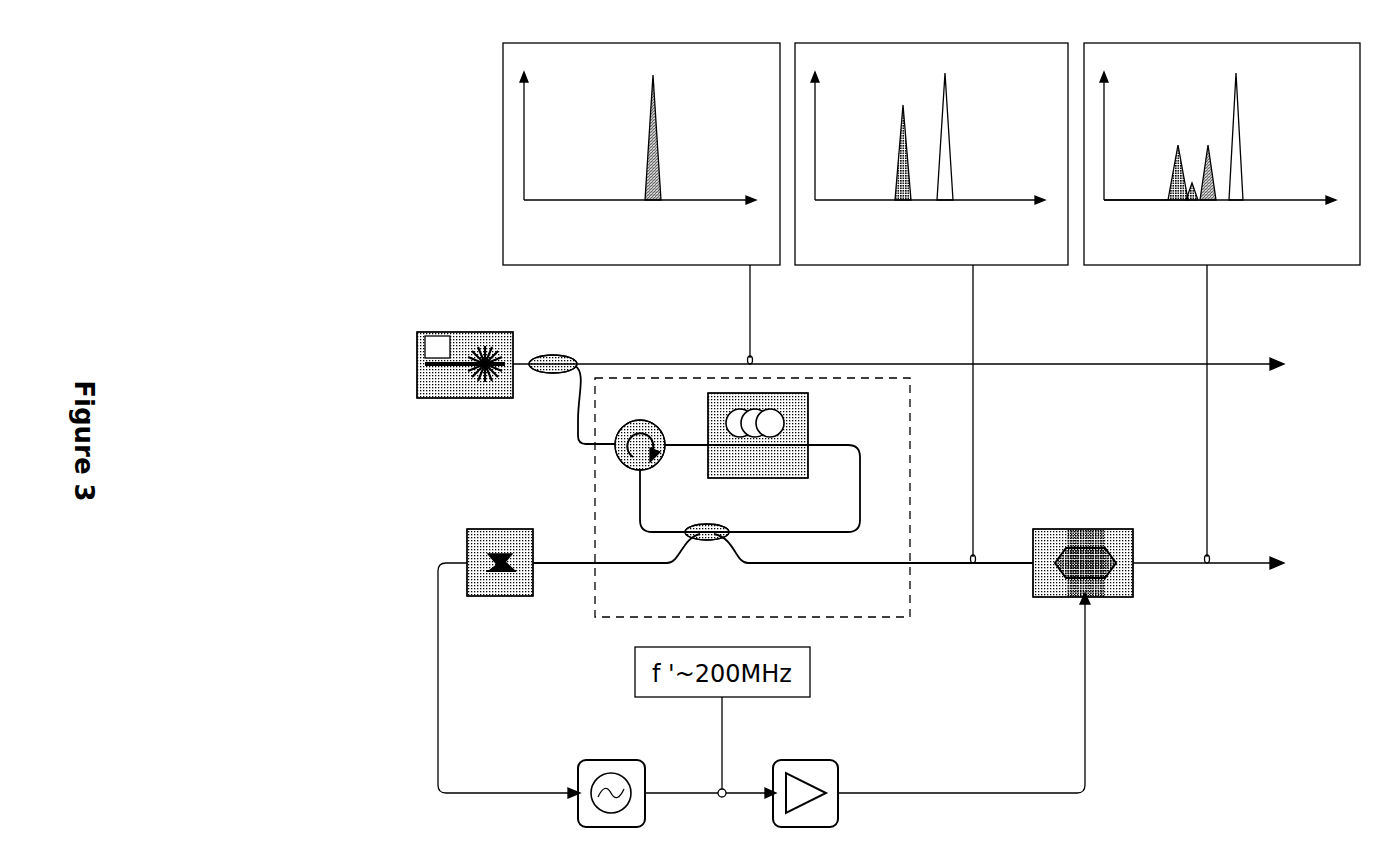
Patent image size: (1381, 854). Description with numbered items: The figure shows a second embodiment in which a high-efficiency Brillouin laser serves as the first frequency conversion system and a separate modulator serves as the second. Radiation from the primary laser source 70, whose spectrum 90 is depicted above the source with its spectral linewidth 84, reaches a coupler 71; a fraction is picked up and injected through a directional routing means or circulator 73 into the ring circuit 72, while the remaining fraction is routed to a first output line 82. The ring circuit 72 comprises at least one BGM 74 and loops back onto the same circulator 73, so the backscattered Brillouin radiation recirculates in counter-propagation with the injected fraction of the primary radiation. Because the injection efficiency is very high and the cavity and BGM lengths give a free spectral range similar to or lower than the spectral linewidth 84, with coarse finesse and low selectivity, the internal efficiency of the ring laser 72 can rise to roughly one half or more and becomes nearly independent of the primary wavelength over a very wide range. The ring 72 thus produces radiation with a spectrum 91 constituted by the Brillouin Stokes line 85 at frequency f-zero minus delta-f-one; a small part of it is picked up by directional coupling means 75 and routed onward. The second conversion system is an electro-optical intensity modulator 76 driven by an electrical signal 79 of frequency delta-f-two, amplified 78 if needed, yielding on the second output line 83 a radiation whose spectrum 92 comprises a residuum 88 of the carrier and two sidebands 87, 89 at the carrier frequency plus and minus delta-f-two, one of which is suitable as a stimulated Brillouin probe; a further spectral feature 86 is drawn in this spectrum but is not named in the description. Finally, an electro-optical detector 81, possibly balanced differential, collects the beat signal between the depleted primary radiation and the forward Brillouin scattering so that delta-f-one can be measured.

The primary laser source 70 is at (470, 400).
The coupler 71 is at (578, 358).
The ring circuit 72 is at (593, 598).
The circulator 73 is at (662, 462).
The BGM 74 is at (812, 423).
The directional coupling means 75 is at (714, 544).
The electro-optical intensity modulator 76 is at (1088, 528).
The amplifier 78 is at (818, 760).
The electrical signal 79 is at (575, 790).
The electro-optical detector 81 is at (482, 528).
The first output line 82 is at (1290, 359).
The second output line 83 is at (1290, 559).
The spectral linewidth 84 is at (657, 125).
The Brillouin Stokes line 85 is at (902, 108).
The spectral baseline 86 is at (1160, 197).
The sideband 87 is at (1177, 145).
The residuum of the carrier 88 is at (1191, 182).
The sideband 89 is at (1212, 145).
The first spectrum diagram 90 is at (610, 203).
The spectrum 91 is at (931, 303).
The spectrum 92 is at (1222, 303).